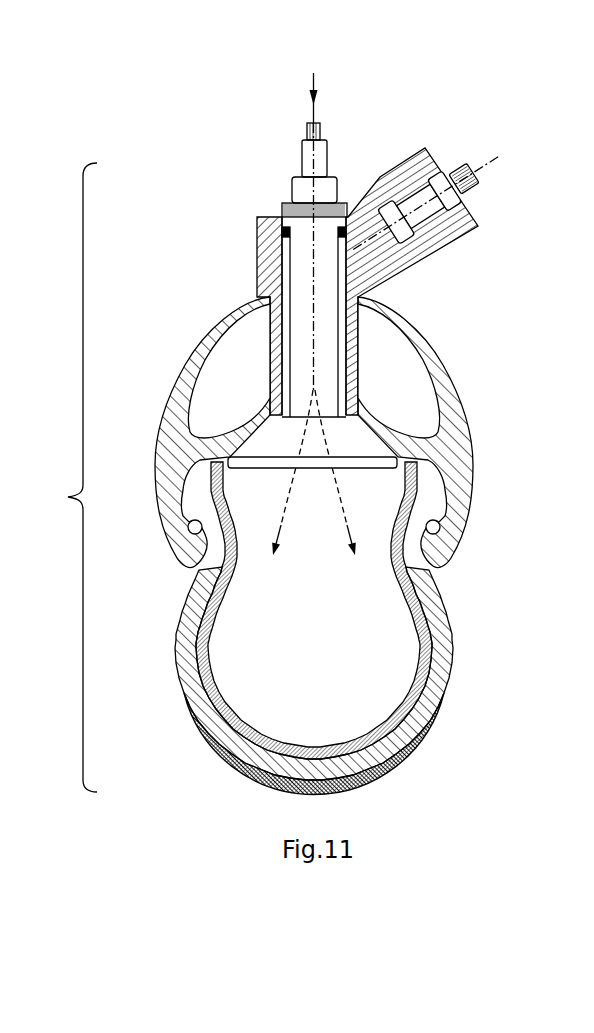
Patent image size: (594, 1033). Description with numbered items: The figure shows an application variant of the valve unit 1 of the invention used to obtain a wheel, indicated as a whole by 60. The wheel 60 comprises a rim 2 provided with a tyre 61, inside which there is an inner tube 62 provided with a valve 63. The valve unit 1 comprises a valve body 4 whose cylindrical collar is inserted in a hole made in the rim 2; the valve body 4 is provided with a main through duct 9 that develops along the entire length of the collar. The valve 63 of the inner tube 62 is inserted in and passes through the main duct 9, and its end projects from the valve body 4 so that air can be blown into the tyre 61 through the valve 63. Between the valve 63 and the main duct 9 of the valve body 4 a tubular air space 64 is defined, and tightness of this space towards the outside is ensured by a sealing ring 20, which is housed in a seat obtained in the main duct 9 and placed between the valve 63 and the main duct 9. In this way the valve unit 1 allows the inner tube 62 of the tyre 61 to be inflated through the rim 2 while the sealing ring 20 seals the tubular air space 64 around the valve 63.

The valve unit 1 is at (207, 181).
The sealing ring 20 is at (281, 217).
The valve body 4 is at (267, 234).
The main through duct 9 is at (345, 267).
The tubular air space 64 is at (268, 297).
The valve 63 is at (326, 305).
The rim 2 is at (457, 456).
The inner tube 62 is at (413, 600).
The tyre 61 is at (440, 658).
The wheel 60 is at (58, 477).